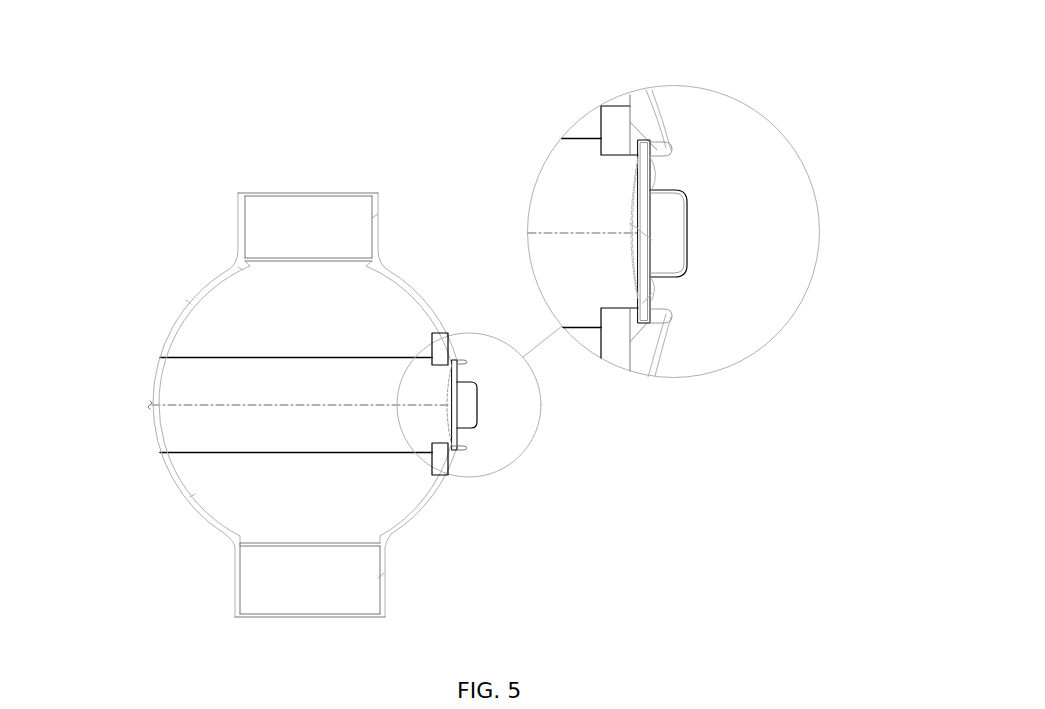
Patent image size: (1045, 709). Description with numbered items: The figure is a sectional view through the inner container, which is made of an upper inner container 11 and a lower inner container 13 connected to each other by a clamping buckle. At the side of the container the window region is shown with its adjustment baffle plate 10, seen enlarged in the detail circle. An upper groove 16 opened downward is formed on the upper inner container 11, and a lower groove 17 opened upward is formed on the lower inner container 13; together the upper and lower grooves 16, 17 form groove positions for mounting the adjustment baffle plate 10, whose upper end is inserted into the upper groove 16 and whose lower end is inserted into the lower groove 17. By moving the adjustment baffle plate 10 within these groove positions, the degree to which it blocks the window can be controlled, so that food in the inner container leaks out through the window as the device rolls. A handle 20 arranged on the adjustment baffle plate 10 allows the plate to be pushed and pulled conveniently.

The adjustment baffle plate 10 is at (647, 303).
The upper inner container 11 is at (183, 297).
The lower inner container 13 is at (205, 523).
The upper groove 16 is at (660, 142).
The lower groove 17 is at (663, 322).
The handle 20 is at (668, 223).